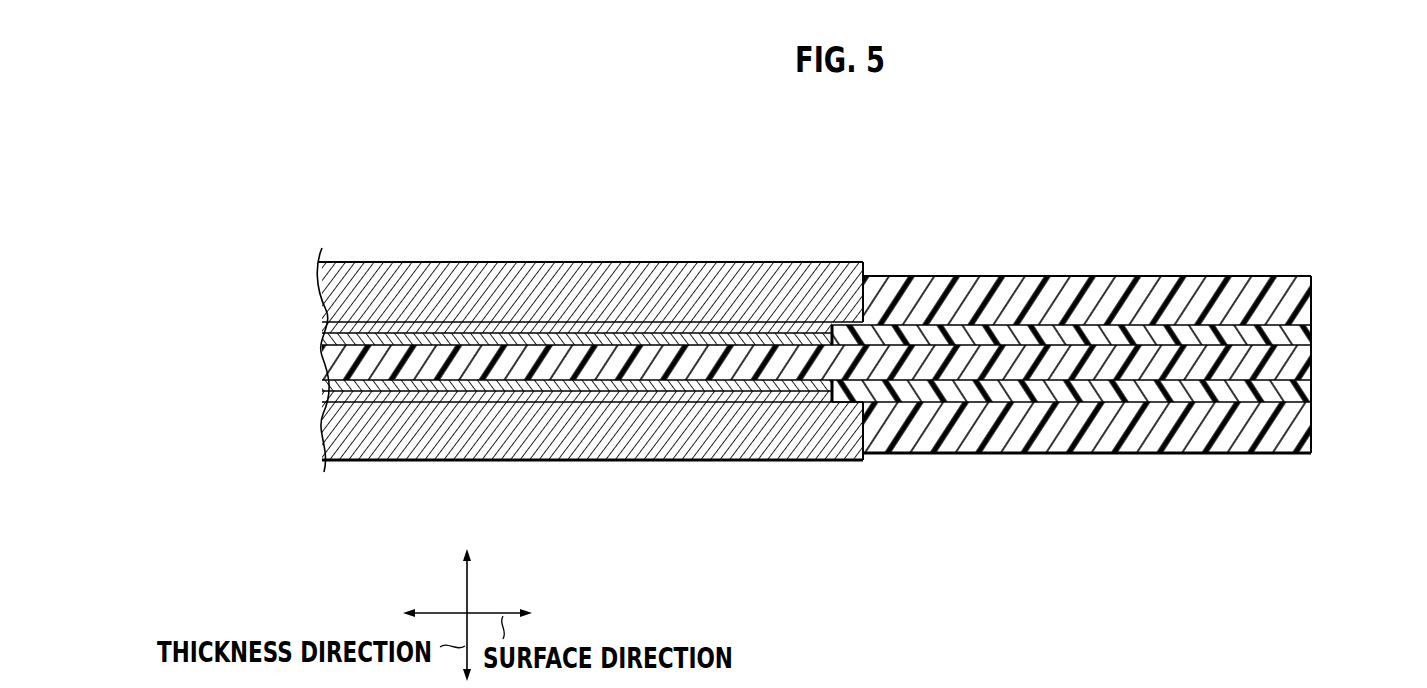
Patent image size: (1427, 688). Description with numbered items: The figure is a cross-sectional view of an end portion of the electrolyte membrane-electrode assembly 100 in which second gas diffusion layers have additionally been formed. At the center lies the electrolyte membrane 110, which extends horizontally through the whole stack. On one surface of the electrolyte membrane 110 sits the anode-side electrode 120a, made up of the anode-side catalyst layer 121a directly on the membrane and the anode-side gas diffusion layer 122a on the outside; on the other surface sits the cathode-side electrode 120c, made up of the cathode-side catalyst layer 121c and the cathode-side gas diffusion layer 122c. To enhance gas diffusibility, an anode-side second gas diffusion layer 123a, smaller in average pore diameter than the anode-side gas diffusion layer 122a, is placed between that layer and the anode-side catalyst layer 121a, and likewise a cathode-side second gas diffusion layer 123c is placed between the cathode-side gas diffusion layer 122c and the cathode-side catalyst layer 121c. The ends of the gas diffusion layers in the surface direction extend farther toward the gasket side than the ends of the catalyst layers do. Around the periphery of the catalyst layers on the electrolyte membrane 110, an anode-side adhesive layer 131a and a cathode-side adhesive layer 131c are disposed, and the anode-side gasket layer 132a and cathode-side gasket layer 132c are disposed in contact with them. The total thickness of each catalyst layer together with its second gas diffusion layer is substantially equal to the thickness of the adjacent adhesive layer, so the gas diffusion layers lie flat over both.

The electrolyte membrane-electrode assembly 100 is at (692, 360).
The electrolyte membrane 110 is at (331, 357).
The anode-side electrode 120a is at (726, 301).
The cathode-side electrode 120c is at (502, 418).
The anode-side catalyst layer 121a is at (331, 338).
The cathode-side catalyst layer 121c is at (331, 385).
The anode-side gas diffusion layer 122a is at (331, 275).
The cathode-side gas diffusion layer 122c is at (331, 448).
The anode-side second gas diffusion layer 123a is at (331, 327).
The cathode-side second gas diffusion layer 123c is at (331, 394).
The anode-side adhesive layer 131a is at (1304, 338).
The cathode-side adhesive layer 131c is at (1307, 393).
The anode-side gasket layer 132a is at (1307, 292).
The cathode-side gasket layer 132c is at (1307, 430).